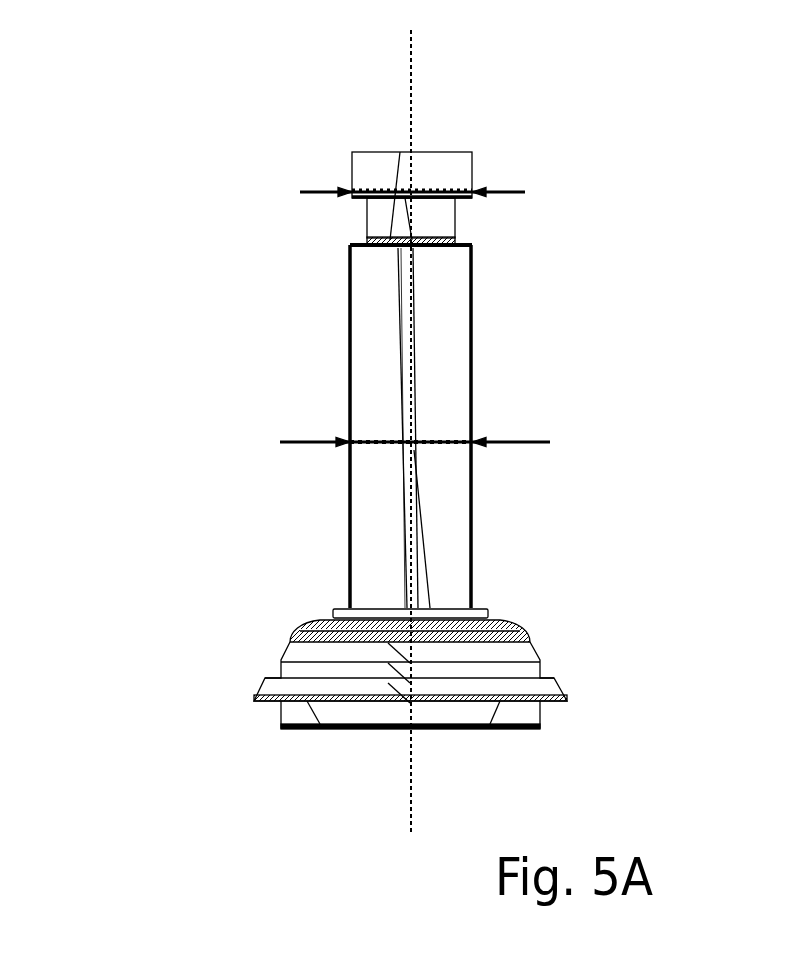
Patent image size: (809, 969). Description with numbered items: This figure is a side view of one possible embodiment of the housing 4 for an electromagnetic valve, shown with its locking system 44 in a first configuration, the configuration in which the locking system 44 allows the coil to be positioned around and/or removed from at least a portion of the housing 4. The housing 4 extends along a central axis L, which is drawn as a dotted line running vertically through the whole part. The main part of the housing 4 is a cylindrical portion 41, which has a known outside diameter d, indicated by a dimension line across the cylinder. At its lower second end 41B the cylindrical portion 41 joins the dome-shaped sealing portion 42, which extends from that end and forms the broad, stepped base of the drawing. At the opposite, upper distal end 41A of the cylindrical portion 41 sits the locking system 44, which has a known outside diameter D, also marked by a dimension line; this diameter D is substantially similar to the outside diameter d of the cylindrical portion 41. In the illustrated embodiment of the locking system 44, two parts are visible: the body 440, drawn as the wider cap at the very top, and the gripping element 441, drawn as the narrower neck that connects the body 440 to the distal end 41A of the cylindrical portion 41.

The housing 4 is at (202, 439).
The locking system 44 is at (337, 162).
The body 440 is at (380, 160).
The gripping element 441 is at (370, 223).
The cylindrical portion 41 is at (500, 407).
The distal end 41A is at (528, 252).
The second end 41B is at (592, 594).
The dome-shaped sealing portion 42 is at (222, 677).
The outside diameter of the locking system D is at (452, 192).
The outside diameter of the cylindrical portion d is at (437, 447).
The axis L is at (411, 770).